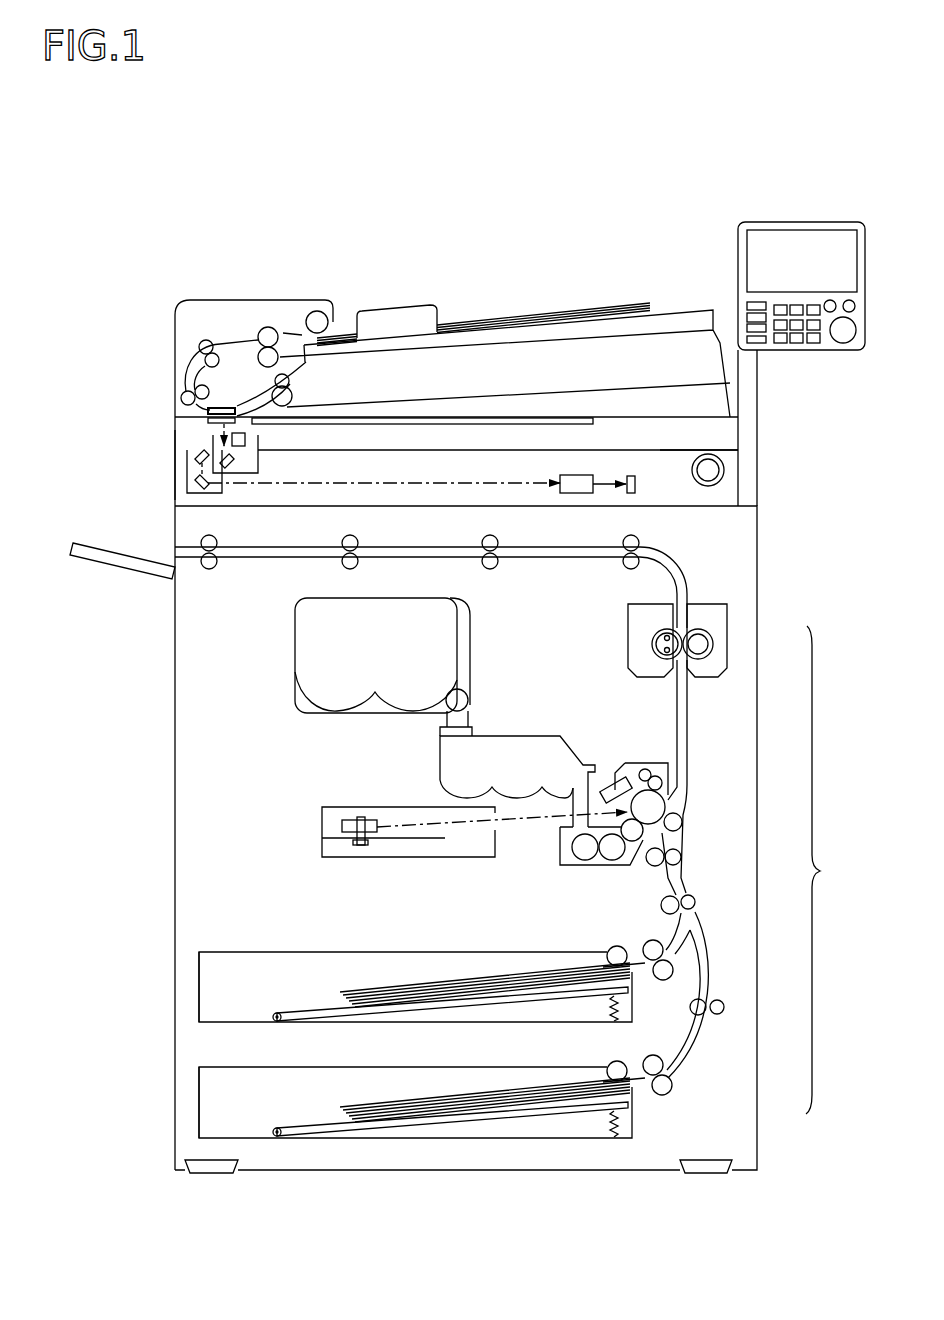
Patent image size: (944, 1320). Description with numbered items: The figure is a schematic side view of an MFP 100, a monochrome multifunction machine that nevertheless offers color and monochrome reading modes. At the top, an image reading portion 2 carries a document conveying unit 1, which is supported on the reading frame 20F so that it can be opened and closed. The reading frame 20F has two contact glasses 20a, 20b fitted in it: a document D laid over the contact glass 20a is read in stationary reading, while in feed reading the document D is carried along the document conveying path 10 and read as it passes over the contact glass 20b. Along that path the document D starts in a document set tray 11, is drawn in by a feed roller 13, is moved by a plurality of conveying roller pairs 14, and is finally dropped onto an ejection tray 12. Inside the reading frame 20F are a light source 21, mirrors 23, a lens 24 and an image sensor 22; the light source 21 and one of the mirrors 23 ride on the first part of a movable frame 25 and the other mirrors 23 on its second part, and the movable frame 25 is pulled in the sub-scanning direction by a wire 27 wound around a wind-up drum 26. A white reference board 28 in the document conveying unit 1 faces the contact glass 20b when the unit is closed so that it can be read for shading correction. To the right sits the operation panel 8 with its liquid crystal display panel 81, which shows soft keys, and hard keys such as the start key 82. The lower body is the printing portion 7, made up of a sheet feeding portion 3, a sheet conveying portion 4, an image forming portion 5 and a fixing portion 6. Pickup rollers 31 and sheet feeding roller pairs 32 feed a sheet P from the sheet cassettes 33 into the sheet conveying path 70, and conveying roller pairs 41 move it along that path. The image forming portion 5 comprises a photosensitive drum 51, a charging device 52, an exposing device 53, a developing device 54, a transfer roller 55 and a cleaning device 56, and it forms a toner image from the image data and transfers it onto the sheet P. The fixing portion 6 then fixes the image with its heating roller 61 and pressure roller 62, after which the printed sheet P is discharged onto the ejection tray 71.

The MFP 100 is at (187, 285).
The document conveying unit 1 is at (174, 307).
The image reading portion 2 is at (173, 502).
The sheet feeding portion 3 is at (636, 1117).
The sheet conveying portion 4 is at (726, 1003).
The image forming portion 5 is at (684, 815).
The fixing portion 6 is at (728, 663).
The printing portion 7 is at (822, 870).
The operation panel 8 is at (737, 221).
The document conveying path 10 is at (247, 336).
The document set tray 11 is at (711, 305).
The ejection tray 12 is at (530, 393).
The feed roller 13 is at (317, 310).
The conveying roller pairs 14 is at (204, 340).
The contact glass 20a is at (595, 424).
The contact glass 20b is at (186, 393).
The reading frame 20F is at (175, 483).
The light source 21 is at (247, 440).
The image sensor 22 is at (636, 478).
The mirrors 23 is at (199, 452).
The lens 24 is at (560, 476).
The movable frame 25 is at (188, 462).
The wind-up drum 26 is at (706, 488).
The wire 27 is at (667, 451).
The white reference board 28 is at (223, 410).
The pickup rollers 31 is at (608, 950).
The sheet feeding roller pairs 32 is at (660, 981).
The sheet cassettes 33 is at (265, 952).
The conveying roller pairs 41 is at (211, 570).
The photosensitive drum 51 is at (635, 795).
The charging device 52 is at (607, 785).
The exposing device 53 is at (322, 825).
The developing device 54 is at (597, 862).
The transfer roller 55 is at (683, 824).
The cleaning device 56 is at (650, 768).
The heating roller 61 is at (652, 643).
The pressure roller 62 is at (700, 629).
The sheet conveying path 70 is at (272, 559).
The ejection tray 71 is at (128, 577).
The liquid crystal display panel 81 is at (790, 240).
The start key 82 is at (841, 337).
The document D is at (528, 311).
The sheet P is at (340, 995).